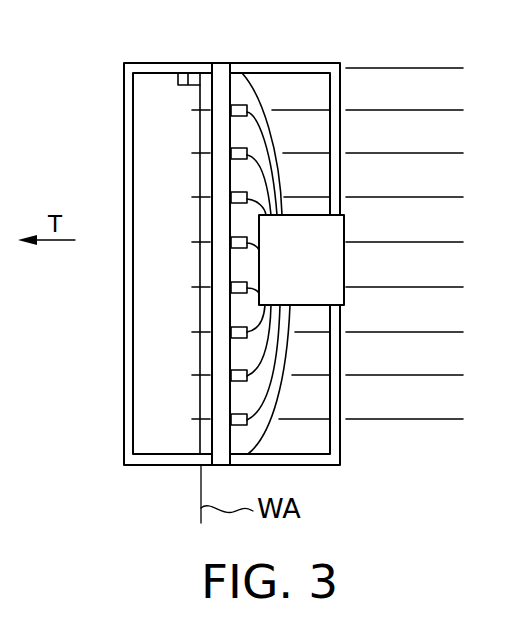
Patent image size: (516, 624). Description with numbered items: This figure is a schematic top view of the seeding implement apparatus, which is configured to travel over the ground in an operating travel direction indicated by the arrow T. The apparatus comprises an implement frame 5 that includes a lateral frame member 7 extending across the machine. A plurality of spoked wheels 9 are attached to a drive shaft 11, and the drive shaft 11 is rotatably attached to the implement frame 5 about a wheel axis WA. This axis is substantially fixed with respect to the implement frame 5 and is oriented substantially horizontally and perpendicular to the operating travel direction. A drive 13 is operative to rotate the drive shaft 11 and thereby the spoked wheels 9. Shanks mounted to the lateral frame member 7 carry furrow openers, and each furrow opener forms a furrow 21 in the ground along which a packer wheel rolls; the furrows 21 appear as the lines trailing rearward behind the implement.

The implement frame 5 is at (336, 63).
The lateral frame member 7 is at (212, 400).
The spoked wheels 9 is at (192, 109).
The drive shaft 11 is at (200, 134).
The drive 13 is at (178, 78).
The furrow 21 is at (307, 420).